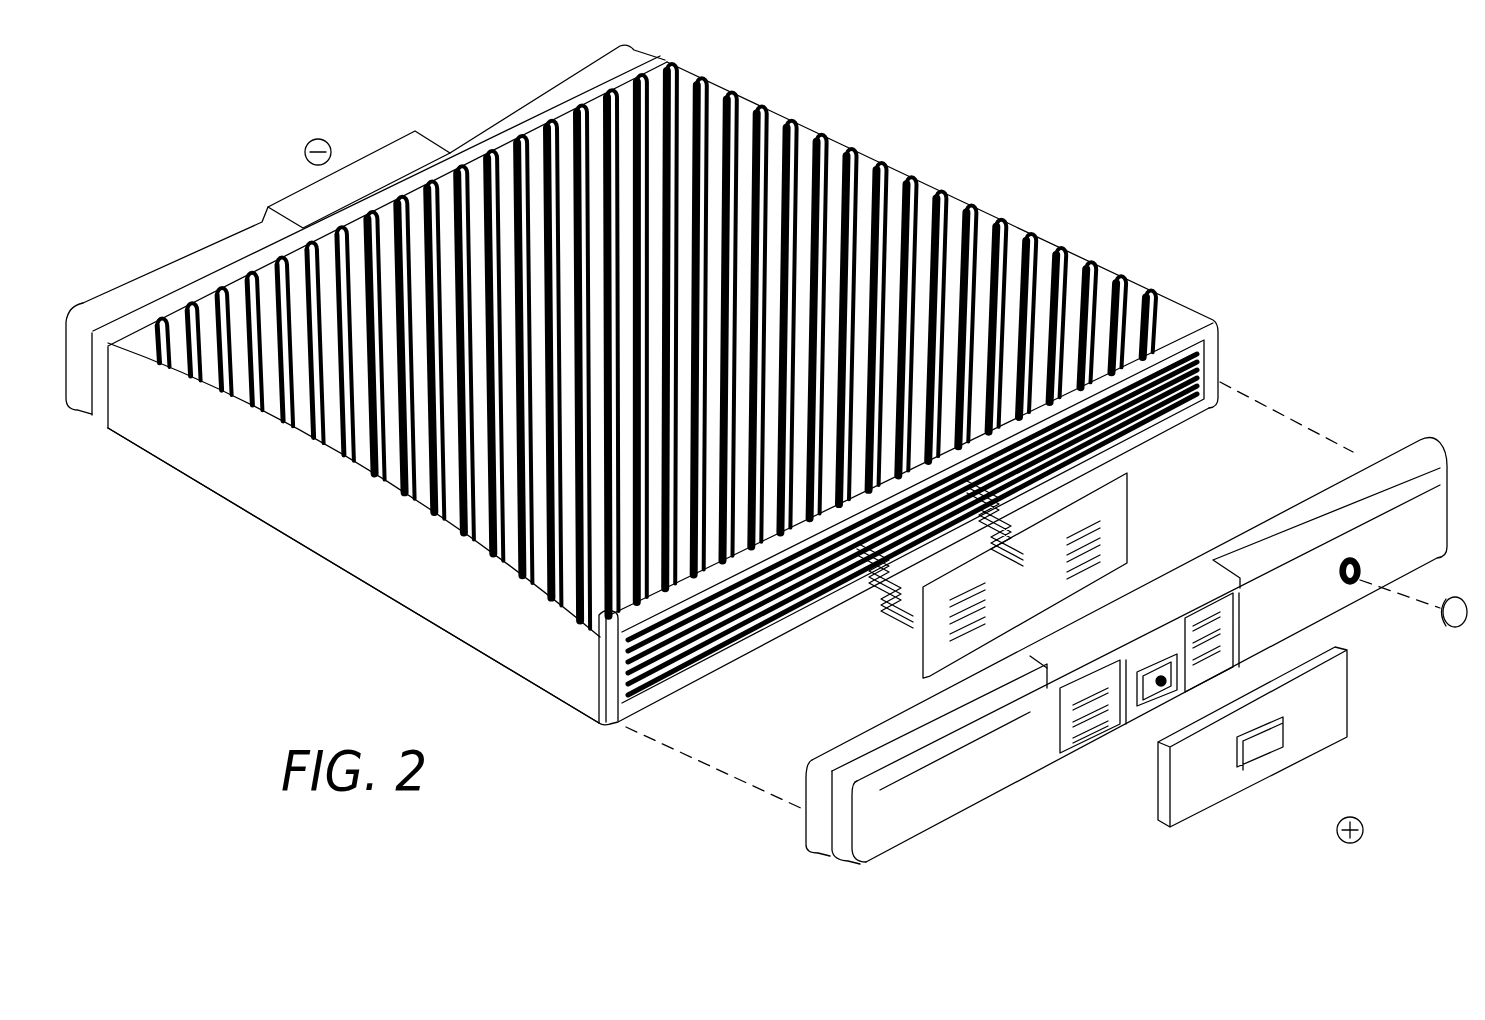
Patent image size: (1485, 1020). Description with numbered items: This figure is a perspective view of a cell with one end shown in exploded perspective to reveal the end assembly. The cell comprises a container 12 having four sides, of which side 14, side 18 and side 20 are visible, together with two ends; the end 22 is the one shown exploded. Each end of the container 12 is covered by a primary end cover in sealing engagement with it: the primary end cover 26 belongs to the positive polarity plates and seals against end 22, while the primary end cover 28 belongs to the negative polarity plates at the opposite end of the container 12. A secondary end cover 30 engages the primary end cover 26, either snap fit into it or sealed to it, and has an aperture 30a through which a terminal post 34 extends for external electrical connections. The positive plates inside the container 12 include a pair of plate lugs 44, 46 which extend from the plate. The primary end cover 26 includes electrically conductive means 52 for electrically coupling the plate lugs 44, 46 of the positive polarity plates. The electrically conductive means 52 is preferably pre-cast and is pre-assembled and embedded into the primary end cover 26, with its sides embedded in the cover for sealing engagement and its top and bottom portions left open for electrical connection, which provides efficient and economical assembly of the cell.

The container 12 is at (1116, 270).
The side 14 is at (956, 208).
The side 18 is at (598, 724).
The side 20 is at (490, 660).
The end 22 is at (1222, 325).
The primary end cover 26 is at (1405, 446).
The primary end cover 28 is at (540, 83).
The secondary end cover 30 is at (1273, 746).
The aperture 30a is at (1256, 758).
The terminal post 34 is at (1153, 695).
The plate lug 44 is at (880, 556).
The plate lug 46 is at (1095, 474).
The electrically conductive means 52 is at (1228, 610).